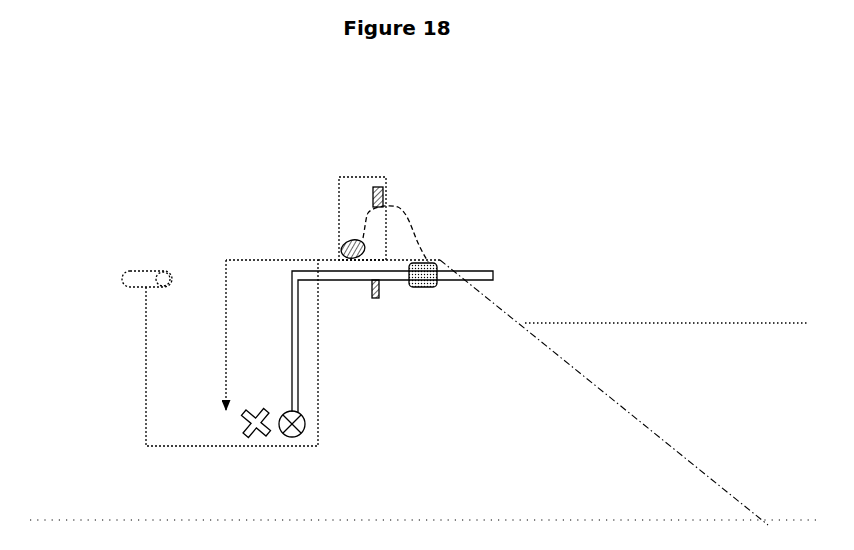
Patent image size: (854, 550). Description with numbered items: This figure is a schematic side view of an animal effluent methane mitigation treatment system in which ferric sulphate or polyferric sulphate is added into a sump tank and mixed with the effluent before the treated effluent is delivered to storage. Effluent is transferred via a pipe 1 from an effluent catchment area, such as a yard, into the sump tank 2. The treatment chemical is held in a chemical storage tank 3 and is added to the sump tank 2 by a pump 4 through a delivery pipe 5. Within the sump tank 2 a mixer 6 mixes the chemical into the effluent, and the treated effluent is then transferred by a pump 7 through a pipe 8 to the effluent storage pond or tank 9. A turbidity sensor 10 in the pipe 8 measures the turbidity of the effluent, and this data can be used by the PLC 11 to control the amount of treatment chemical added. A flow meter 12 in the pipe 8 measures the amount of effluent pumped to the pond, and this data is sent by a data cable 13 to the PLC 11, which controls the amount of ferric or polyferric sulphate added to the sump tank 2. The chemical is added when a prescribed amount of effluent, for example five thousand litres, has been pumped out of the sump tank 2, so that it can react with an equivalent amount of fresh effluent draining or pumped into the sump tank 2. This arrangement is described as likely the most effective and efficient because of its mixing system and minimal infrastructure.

The pipe 1 is at (120, 279).
The sump tank 2 is at (161, 446).
The chemical storage tank 3 is at (351, 164).
The pump 4 is at (330, 248).
The delivery pipe 5 is at (222, 286).
The mixer 6 is at (258, 430).
The pump 7 is at (302, 433).
The pipe 8 is at (332, 282).
The effluent storage pond/tank 9 is at (715, 318).
The turbidity sensor 10 is at (377, 300).
The PLC 11 is at (393, 183).
The flow meter 12 is at (427, 290).
The data cable 13 is at (418, 225).